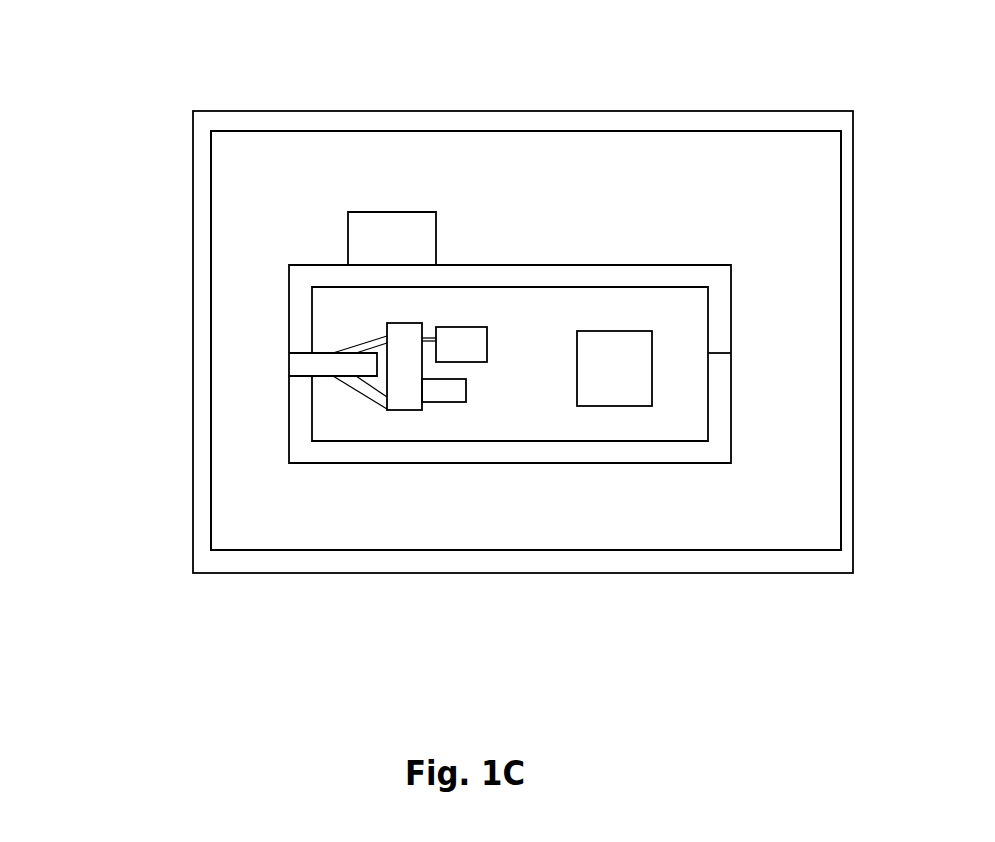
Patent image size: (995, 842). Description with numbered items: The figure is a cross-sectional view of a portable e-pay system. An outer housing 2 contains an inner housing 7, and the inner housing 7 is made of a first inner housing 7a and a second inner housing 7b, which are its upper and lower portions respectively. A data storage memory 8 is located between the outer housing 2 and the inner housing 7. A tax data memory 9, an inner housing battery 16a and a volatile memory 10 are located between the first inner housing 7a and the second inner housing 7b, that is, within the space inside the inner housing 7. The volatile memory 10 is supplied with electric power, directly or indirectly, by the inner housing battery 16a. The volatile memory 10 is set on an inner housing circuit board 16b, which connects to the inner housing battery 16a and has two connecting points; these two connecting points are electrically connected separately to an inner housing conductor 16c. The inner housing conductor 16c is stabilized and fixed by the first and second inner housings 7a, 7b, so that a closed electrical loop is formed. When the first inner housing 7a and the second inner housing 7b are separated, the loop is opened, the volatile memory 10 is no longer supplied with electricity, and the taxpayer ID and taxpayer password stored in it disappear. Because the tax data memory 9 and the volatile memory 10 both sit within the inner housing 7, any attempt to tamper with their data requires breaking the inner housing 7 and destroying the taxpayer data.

The outer housing 2 is at (766, 111).
The inner housing 7 is at (123, 309).
The first inner housing 7a is at (289, 310).
The second inner housing 7b is at (289, 418).
The data storage memory 8 is at (403, 212).
The tax data memory 9 is at (447, 402).
The volatile memory 10 is at (632, 406).
The inner housing battery 16a is at (469, 327).
The inner housing circuit board 16b is at (403, 383).
The inner housing conductor 16c is at (296, 366).